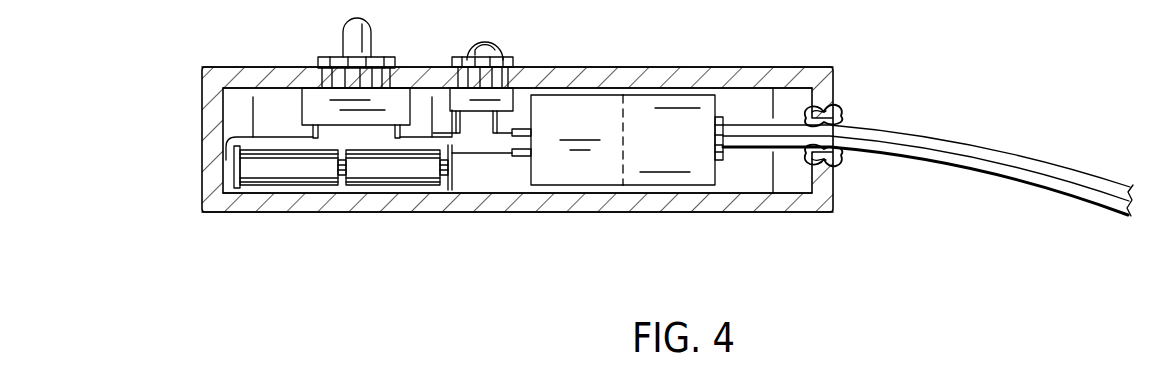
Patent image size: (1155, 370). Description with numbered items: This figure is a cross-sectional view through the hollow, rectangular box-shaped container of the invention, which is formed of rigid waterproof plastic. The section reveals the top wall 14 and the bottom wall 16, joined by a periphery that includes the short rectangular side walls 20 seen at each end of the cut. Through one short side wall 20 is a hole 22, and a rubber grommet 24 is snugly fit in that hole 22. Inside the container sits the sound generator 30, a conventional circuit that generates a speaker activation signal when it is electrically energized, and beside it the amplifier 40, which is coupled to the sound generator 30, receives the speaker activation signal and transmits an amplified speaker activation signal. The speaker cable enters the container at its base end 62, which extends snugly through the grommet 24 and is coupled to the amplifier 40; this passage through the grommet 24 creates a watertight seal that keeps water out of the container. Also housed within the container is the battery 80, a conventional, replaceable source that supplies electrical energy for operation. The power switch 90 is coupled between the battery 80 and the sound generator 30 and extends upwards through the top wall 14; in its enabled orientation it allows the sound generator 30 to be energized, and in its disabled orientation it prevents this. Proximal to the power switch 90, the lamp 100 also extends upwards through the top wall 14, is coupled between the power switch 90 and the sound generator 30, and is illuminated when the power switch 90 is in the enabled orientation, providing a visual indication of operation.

The top wall 14 is at (736, 76).
The bottom wall 16 is at (792, 200).
The short rectangular side wall 20 is at (207, 136).
The hole 22 is at (828, 110).
The rubber grommet 24 is at (836, 162).
The sound generator 30 is at (576, 150).
The amplifier 40 is at (672, 150).
The base end 62 is at (748, 137).
The battery 80 is at (440, 196).
The power switch 90 is at (343, 58).
The lamp 100 is at (497, 46).